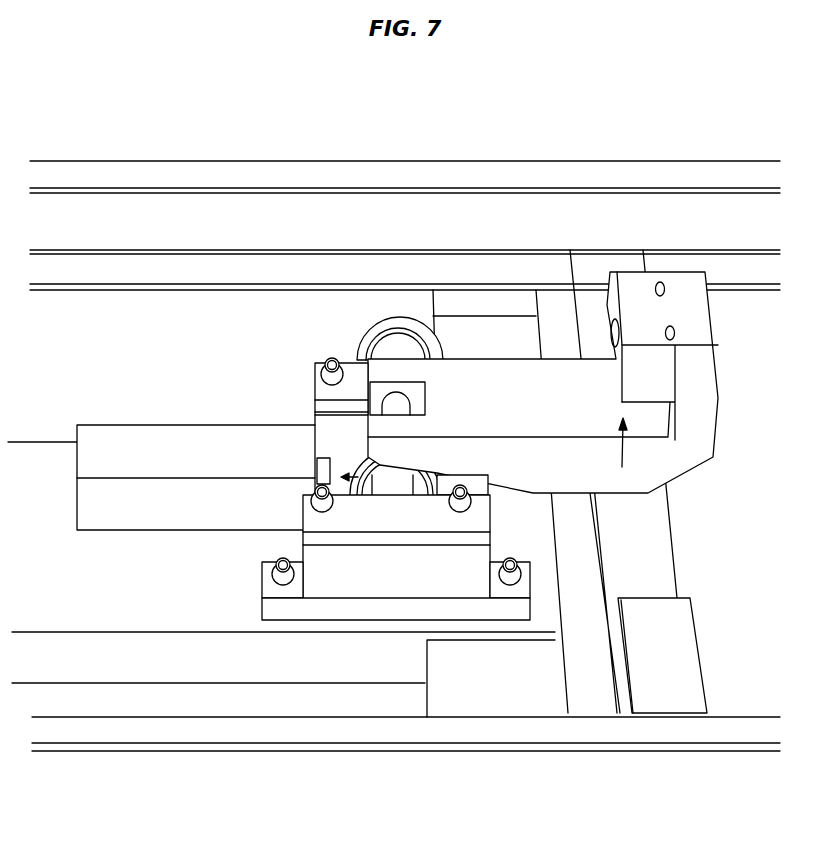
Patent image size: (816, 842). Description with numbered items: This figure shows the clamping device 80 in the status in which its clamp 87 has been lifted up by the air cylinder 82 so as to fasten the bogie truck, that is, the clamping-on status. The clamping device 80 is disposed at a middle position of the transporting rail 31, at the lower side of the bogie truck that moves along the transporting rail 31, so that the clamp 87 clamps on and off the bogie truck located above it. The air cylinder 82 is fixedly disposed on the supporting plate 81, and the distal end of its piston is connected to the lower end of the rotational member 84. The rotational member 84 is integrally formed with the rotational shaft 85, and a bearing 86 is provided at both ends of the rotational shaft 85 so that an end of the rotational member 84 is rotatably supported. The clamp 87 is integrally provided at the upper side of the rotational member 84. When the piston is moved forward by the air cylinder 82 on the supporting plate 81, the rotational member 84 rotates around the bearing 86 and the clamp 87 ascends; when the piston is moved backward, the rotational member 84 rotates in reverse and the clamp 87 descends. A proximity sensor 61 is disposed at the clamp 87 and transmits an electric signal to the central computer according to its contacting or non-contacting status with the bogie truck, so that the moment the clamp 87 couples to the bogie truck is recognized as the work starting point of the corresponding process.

The transporting rail 31 is at (402, 178).
The proximity sensor 61 is at (623, 377).
The clamping device 80 is at (443, 446).
The supporting plate 81 is at (148, 600).
The air cylinder 82 is at (178, 441).
The rotational member 84 is at (589, 415).
The rotational shaft 85 is at (392, 403).
The bearing 86 is at (390, 327).
The clamp 87 is at (677, 310).